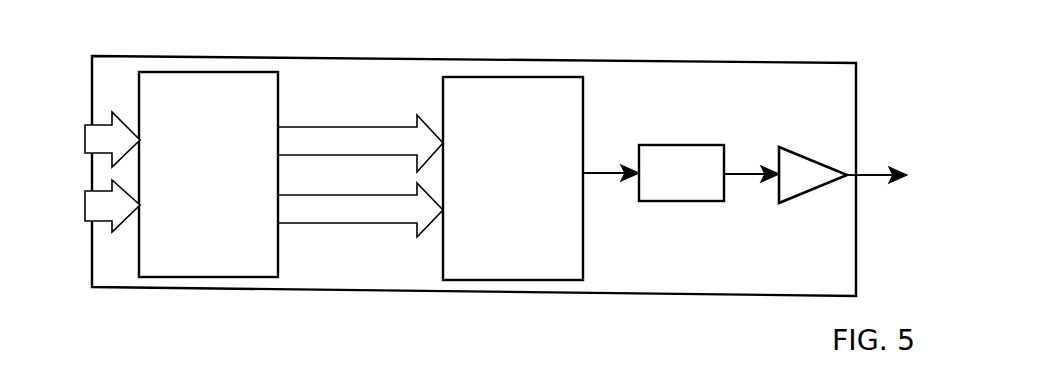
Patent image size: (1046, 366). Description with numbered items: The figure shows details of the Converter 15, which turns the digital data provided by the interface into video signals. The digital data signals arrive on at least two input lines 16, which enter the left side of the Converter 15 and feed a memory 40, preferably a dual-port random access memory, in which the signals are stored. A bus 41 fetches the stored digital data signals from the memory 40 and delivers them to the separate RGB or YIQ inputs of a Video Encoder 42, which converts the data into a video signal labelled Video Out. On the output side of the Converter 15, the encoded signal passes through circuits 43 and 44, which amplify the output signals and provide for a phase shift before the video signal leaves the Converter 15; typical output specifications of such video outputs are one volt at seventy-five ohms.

The converter 15 is at (722, 77).
The input lines 16 is at (97, 139).
The memory 40 is at (247, 83).
The bus 41 is at (363, 148).
The video encoder 42 is at (552, 87).
The output circuit 43 is at (673, 178).
The output circuit 44 is at (797, 178).